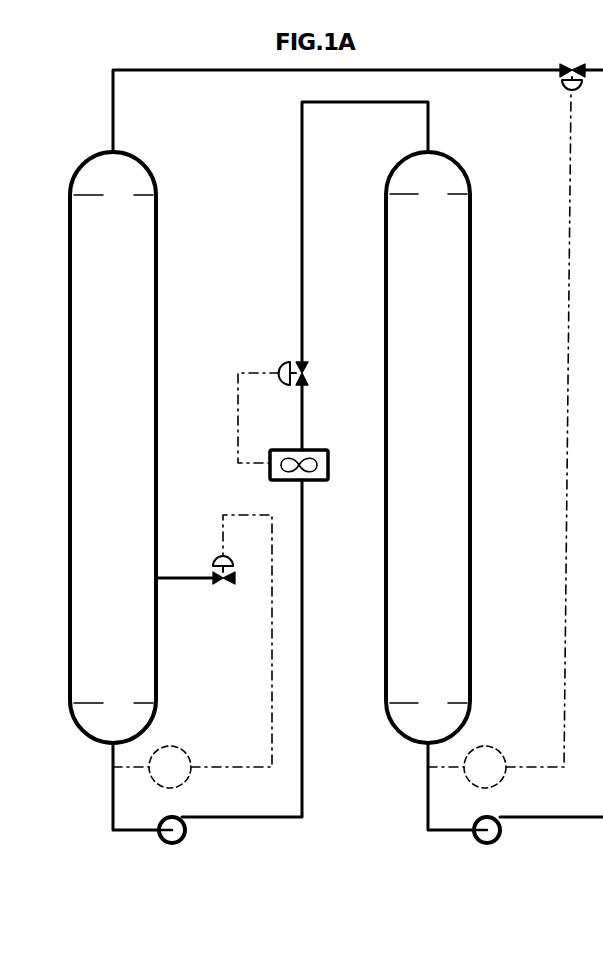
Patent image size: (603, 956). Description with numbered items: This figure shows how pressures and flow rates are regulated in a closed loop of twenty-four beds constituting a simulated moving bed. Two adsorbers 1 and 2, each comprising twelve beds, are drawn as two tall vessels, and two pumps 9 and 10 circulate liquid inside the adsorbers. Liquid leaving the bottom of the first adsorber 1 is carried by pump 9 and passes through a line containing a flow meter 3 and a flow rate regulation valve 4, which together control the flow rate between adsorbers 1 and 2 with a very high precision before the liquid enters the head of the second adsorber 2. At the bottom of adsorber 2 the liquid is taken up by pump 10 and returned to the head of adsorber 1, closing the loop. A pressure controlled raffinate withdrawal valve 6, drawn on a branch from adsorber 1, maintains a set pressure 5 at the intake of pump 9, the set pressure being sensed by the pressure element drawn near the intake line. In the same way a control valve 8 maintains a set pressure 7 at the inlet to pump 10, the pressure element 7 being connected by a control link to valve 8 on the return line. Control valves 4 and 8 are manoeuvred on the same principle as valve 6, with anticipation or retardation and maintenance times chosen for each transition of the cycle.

The adsorber 1 is at (121, 449).
The adsorber 2 is at (440, 451).
The flow meter 3 is at (328, 465).
The flow rate regulation valve 4 is at (304, 363).
The set pressure 5 is at (192, 651).
The pressure controlled raffinate withdrawal valve 6 is at (225, 584).
The set pressure 7 is at (499, 440).
The control valve 8 is at (579, 40).
The pump 9 is at (186, 832).
The pump 10 is at (501, 832).